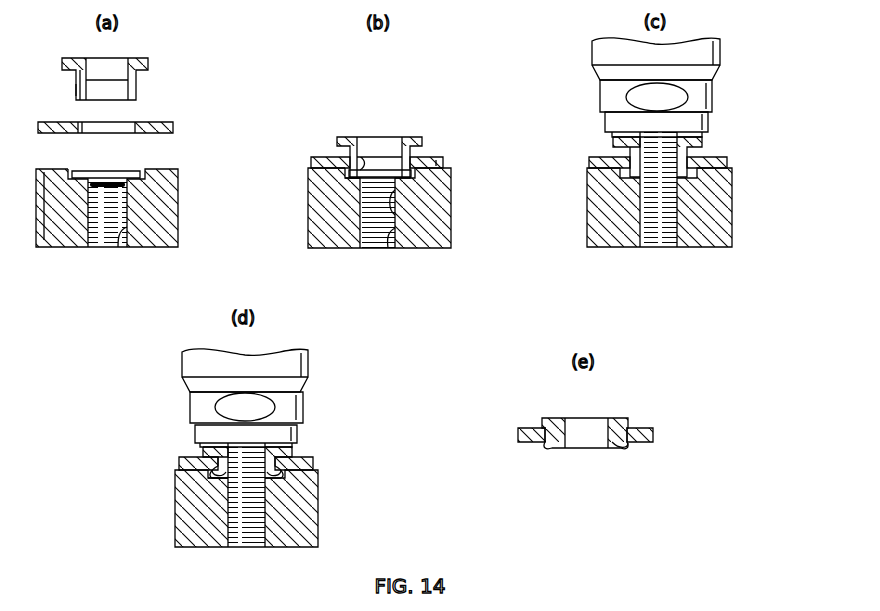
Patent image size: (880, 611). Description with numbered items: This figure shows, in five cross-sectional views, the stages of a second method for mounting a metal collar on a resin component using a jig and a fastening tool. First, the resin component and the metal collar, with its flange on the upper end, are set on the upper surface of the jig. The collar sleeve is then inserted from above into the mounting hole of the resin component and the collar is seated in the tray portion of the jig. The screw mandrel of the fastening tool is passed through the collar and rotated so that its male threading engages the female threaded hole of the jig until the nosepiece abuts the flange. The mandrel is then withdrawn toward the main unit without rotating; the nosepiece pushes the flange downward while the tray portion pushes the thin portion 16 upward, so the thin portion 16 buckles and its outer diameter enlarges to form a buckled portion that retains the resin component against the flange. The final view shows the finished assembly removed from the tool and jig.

The thin portion 16 is at (76, 92).